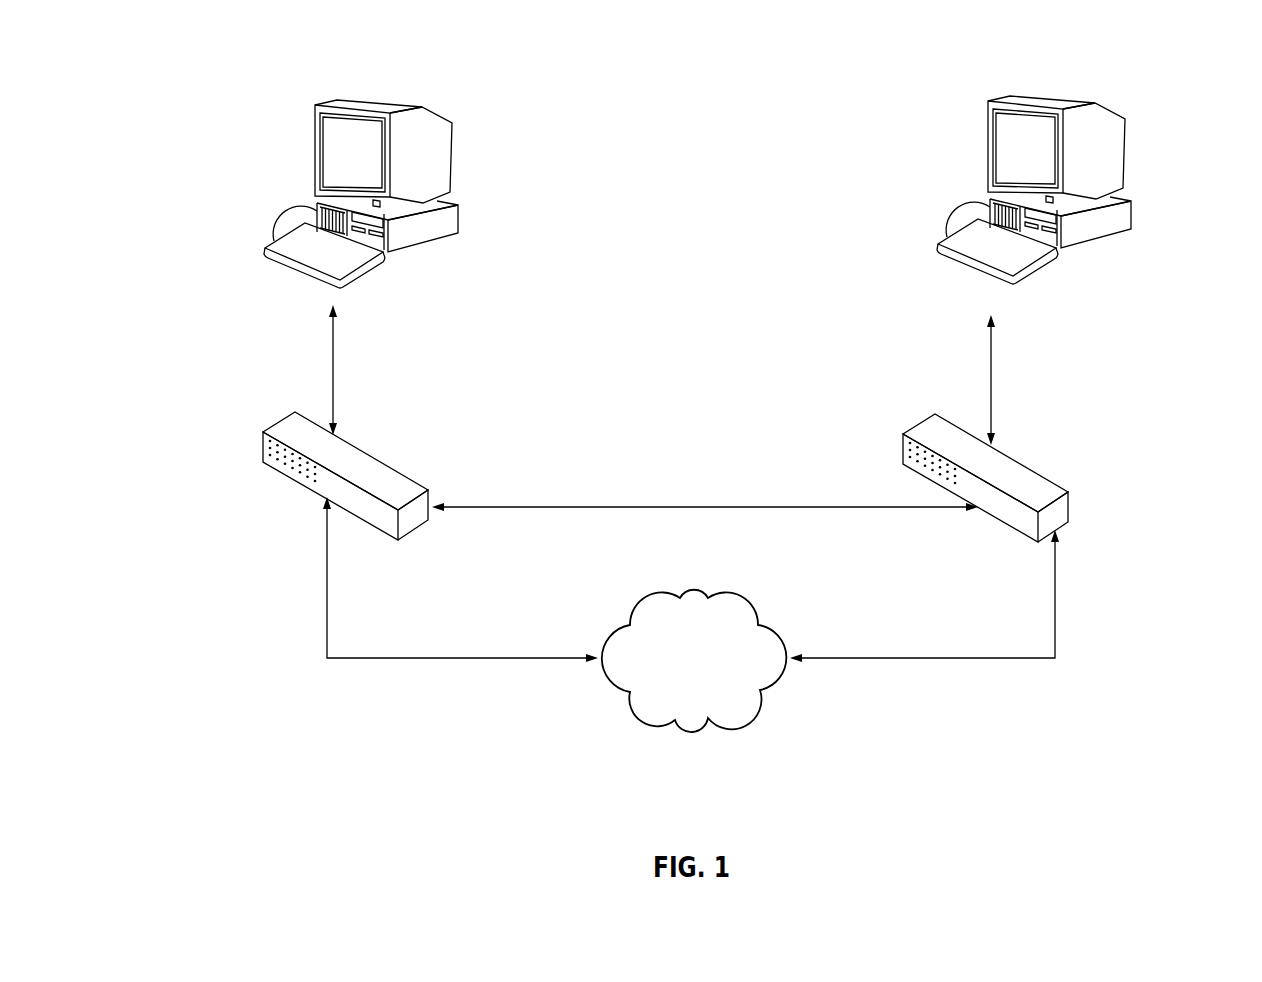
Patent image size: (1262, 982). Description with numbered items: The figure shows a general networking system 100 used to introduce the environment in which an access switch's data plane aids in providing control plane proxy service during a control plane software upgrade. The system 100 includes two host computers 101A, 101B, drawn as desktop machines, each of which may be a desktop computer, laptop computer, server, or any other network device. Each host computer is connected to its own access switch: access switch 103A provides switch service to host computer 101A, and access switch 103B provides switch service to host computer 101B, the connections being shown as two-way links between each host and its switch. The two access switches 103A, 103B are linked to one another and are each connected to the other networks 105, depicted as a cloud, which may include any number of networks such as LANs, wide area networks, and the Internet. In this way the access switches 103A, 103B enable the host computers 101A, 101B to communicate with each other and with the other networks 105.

The general networking system 100 is at (268, 71).
The host computer 101A is at (477, 167).
The host computer 101B is at (1147, 170).
The access switch 103A is at (263, 447).
The access switch 103B is at (903, 448).
The other networks 105 is at (660, 593).